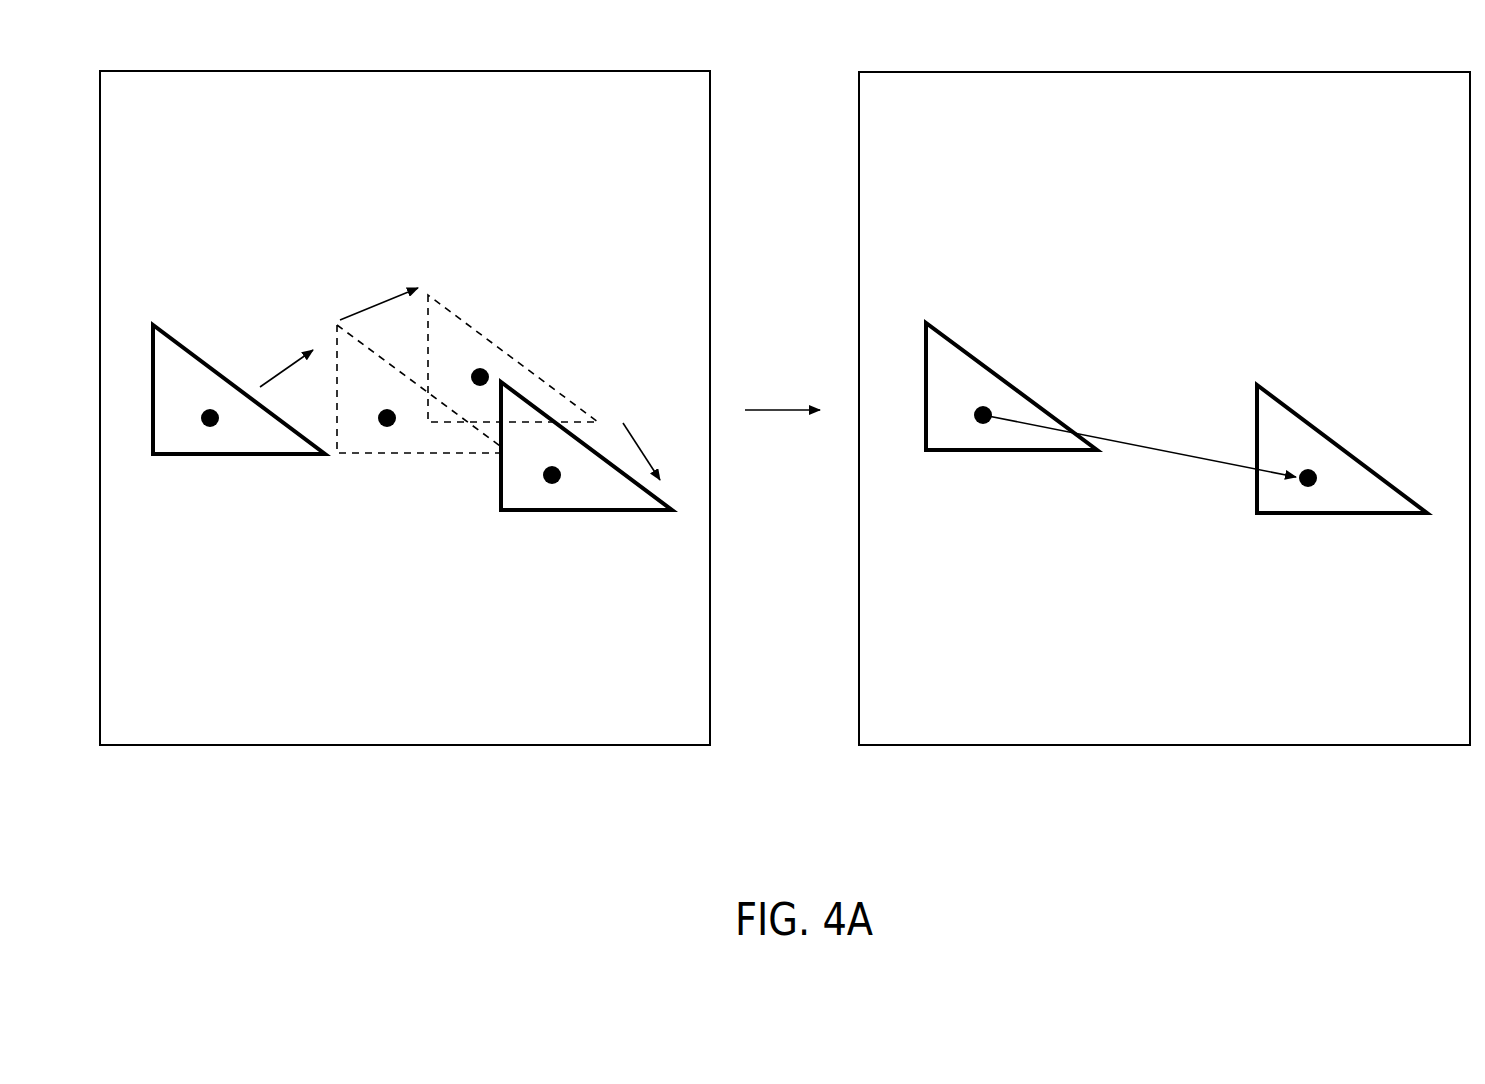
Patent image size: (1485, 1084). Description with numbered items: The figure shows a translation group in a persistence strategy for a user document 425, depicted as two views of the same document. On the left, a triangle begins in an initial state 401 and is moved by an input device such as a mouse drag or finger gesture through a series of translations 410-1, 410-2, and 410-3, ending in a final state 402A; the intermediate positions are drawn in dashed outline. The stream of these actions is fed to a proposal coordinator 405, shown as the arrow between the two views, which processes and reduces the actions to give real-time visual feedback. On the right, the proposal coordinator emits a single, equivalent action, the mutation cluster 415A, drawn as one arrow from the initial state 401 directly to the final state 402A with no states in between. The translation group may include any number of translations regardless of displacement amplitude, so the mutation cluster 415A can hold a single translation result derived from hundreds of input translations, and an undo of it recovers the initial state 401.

The user document 425 is at (213, 152).
The initial state 401 is at (213, 457).
The final state 402A is at (553, 513).
The translation 410-1 is at (277, 373).
The translation 410-2 is at (382, 300).
The translation 410-3 is at (647, 470).
The proposal coordinator 405 is at (775, 408).
The mutation cluster 415A is at (1153, 447).